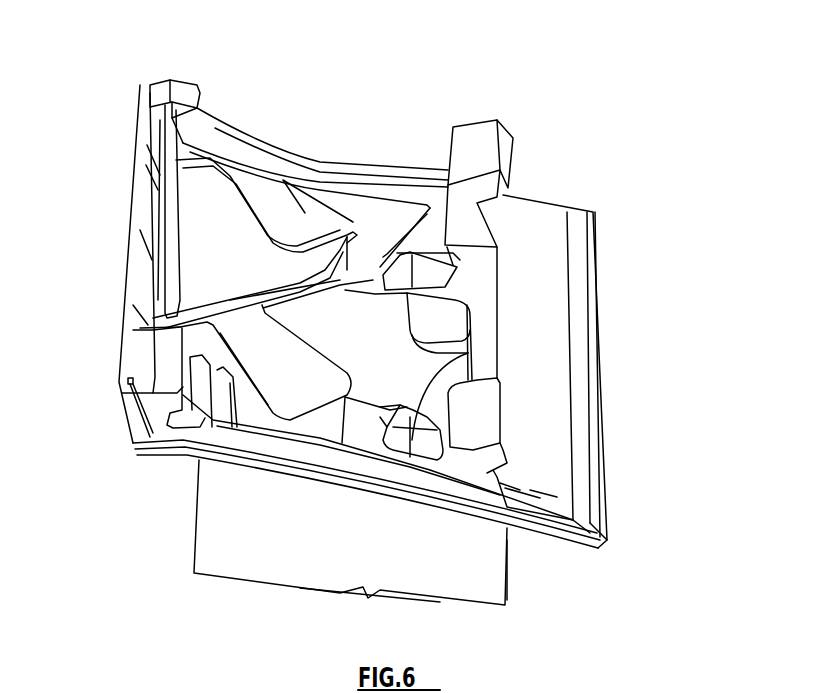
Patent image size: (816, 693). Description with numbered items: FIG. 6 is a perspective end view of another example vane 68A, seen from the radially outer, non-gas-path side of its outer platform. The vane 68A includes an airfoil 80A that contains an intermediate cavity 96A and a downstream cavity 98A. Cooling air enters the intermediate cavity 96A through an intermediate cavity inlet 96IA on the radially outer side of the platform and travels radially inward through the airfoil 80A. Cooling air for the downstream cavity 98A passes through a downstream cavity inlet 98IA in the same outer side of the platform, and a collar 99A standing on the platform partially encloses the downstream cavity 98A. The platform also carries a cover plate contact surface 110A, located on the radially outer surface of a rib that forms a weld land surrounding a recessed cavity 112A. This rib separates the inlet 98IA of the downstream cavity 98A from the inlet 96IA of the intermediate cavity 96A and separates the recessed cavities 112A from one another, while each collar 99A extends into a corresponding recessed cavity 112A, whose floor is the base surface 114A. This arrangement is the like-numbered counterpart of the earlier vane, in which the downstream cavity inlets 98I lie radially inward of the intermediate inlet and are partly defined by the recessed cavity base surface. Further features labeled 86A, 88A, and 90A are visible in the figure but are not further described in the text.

The vane 68A is at (553, 173).
The airfoil 80A is at (407, 580).
The side wall 86A is at (510, 573).
The side wall 88A is at (193, 533).
The retaining tabs 90A is at (197, 87).
The intermediate cavity 96A is at (445, 277).
The intermediate cavity inlet 96IA is at (468, 355).
The downstream cavity 98A is at (333, 265).
The downstream cavity inlet 98I is at (360, 413).
The downstream cavity inlet 98IA is at (382, 240).
The collar 99A is at (305, 213).
The cover plate contact surface 110A is at (157, 303).
The recessed cavity 112A is at (190, 253).
The base surface 114A is at (200, 215).